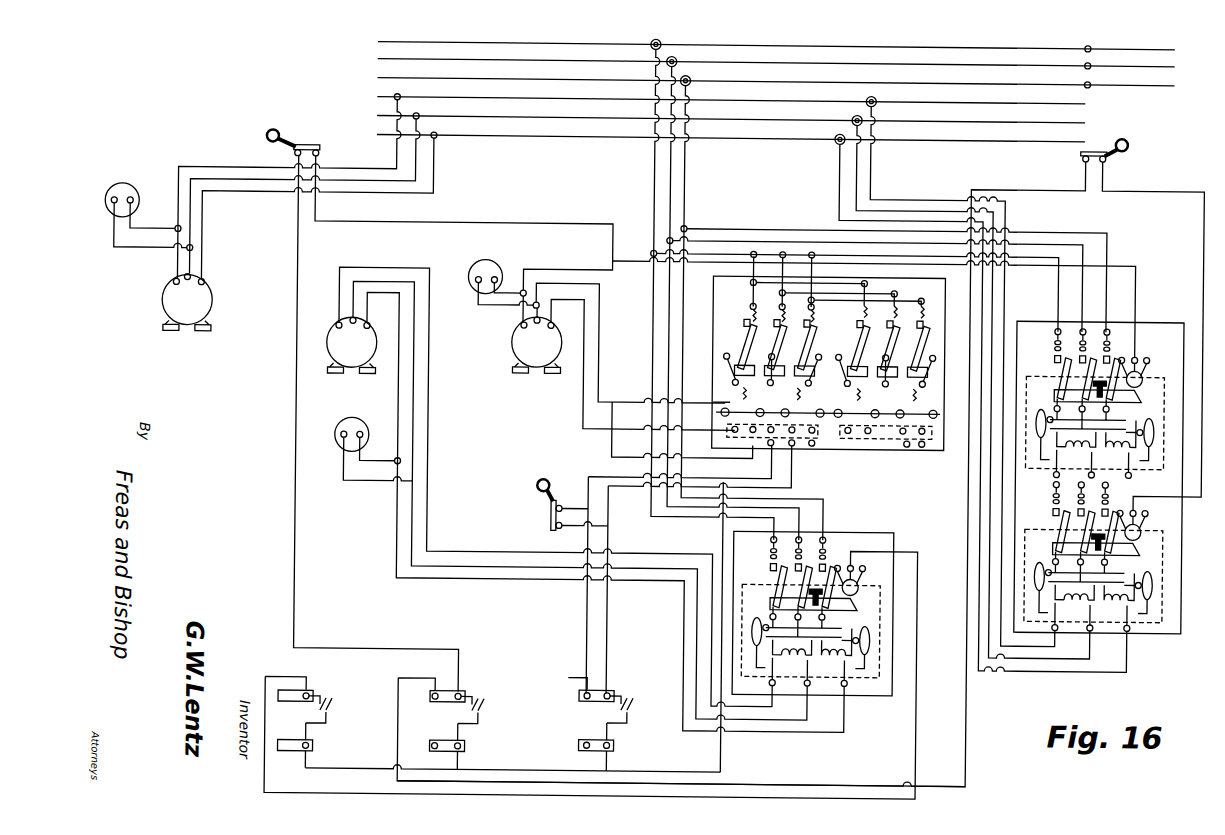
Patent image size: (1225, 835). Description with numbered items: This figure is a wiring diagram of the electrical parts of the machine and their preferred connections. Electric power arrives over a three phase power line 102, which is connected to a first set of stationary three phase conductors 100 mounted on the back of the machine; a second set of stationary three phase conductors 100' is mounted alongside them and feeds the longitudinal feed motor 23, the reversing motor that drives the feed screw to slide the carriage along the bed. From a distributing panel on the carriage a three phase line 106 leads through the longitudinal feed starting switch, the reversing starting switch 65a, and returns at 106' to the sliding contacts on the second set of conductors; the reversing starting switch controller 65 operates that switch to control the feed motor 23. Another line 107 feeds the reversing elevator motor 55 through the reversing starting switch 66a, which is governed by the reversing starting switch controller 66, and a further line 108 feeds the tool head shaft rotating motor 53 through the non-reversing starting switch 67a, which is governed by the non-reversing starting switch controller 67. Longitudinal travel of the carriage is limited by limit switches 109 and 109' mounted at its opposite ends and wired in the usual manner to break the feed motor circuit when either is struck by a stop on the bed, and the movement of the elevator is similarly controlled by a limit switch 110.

The reversing motor 23 is at (212, 295).
The tool head shaft rotating motor 53 is at (334, 324).
The elevator motor 55 is at (511, 341).
The reversing starting switch controller 65 is at (486, 672).
The reversing starting switch 65a is at (1183, 538).
The reversing starting switch controller 66 is at (632, 670).
The reversing starting switch 66a is at (812, 352).
The non-reversing starting switch controller 67 is at (327, 673).
The non-reversing starting switch 67a is at (870, 700).
The stationary three phase conductors 100 is at (776, 82).
The stationary three phase conductors 100' is at (692, 289).
The three phase power line 102 is at (1134, 30).
The three phase line 106 is at (874, 277).
The return of three phase line 106' is at (980, 384).
The line 107 is at (828, 367).
The line 108 is at (649, 306).
The limit switch 109 is at (437, 402).
The limit switch 109' is at (801, 452).
The limit switch 110 is at (534, 517).